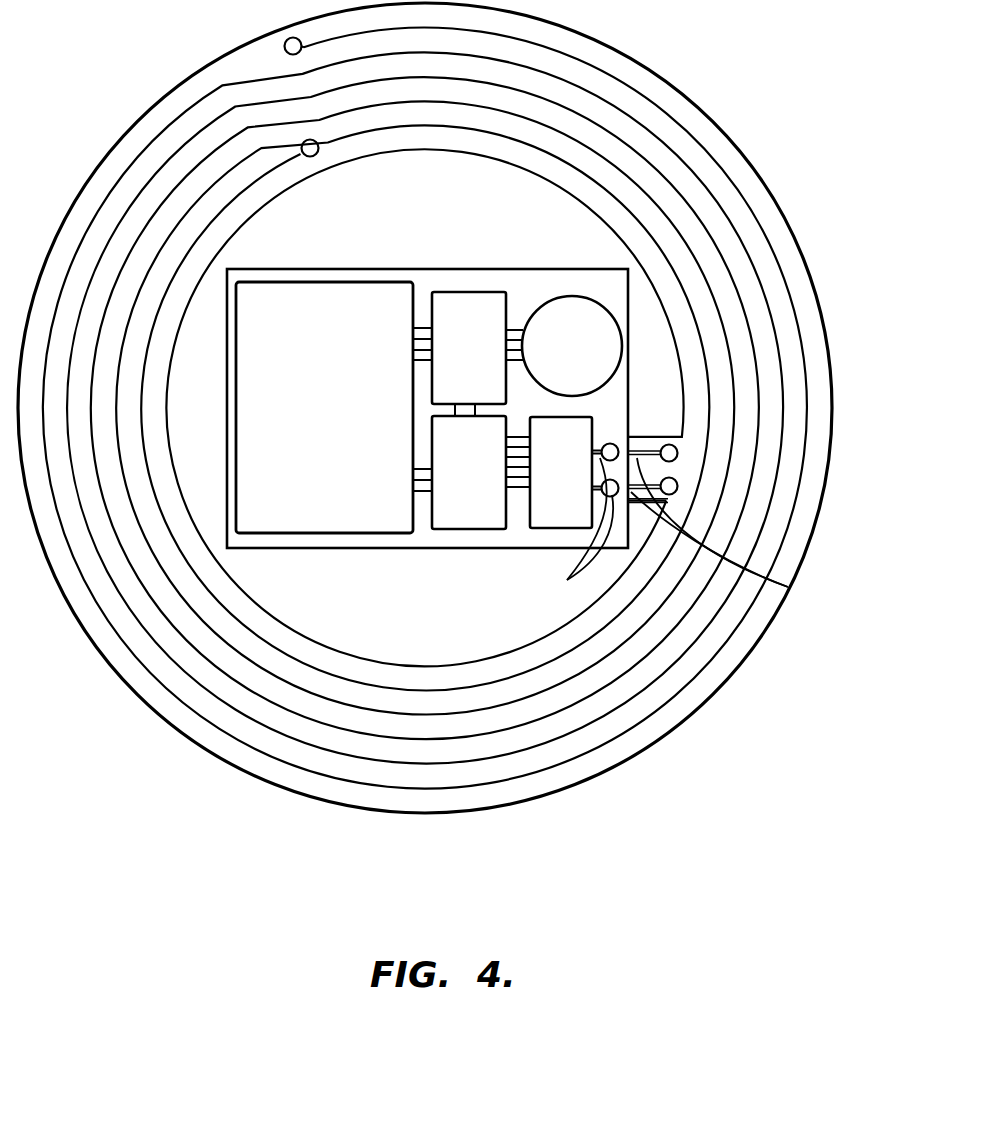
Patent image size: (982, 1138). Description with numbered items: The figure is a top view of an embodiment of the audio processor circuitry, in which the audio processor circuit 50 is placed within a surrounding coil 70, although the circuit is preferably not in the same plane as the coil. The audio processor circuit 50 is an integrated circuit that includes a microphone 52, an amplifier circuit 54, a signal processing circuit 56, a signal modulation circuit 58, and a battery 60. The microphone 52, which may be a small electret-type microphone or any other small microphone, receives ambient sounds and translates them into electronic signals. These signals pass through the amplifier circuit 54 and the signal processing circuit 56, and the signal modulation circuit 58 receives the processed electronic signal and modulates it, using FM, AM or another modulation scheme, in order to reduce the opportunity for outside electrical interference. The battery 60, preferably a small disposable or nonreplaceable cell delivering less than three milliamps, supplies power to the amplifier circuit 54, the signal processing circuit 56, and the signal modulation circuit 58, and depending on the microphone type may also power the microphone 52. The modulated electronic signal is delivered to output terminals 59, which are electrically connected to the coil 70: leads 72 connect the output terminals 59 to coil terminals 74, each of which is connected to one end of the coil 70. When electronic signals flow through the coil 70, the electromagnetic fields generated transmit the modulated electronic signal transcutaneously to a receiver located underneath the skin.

The audio processor circuit 50 is at (628, 400).
The microphone 52 is at (590, 358).
The amplifier circuit 54 is at (487, 360).
The signal processing circuit 56 is at (487, 487).
The signal modulation circuit 58 is at (582, 487).
The output terminals 59 is at (567, 580).
The battery 60 is at (346, 426).
The coil 70 is at (565, 95).
The leads 72 is at (788, 587).
The coil terminals 74 is at (678, 484).